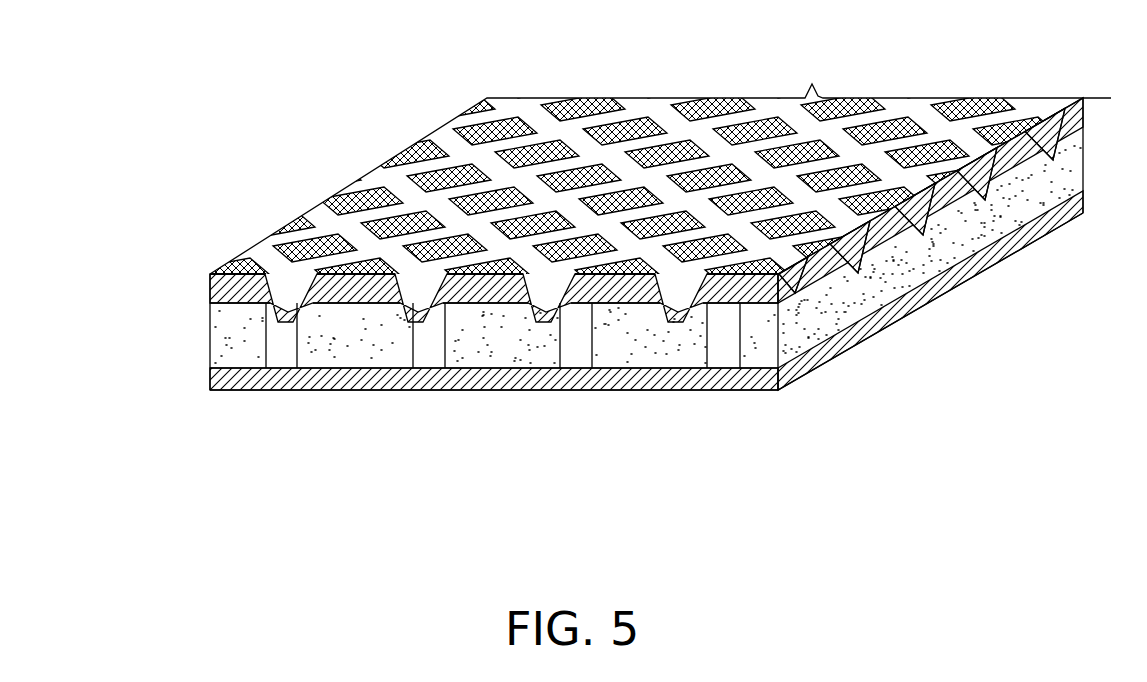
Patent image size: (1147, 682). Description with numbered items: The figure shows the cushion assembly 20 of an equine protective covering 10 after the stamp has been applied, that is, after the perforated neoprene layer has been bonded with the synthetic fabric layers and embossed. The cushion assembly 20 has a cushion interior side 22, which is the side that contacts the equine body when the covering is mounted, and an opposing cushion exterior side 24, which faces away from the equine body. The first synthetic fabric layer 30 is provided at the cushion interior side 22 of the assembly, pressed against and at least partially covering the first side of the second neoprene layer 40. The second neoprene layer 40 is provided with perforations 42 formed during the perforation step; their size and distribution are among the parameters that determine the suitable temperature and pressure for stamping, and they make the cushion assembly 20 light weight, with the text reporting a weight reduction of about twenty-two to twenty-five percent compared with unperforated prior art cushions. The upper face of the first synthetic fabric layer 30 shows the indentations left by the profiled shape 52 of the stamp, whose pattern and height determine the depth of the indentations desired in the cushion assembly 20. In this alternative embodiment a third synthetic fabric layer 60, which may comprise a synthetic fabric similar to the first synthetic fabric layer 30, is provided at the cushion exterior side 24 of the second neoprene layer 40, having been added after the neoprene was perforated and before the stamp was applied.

The equine protective covering 10 is at (584, 240).
The cushion assembly 20 is at (564, 285).
The cushion interior side 22 is at (614, 178).
The cushion exterior side 24 is at (242, 405).
The first synthetic fabric layer 30 is at (228, 289).
The second neoprene layer 40 is at (220, 360).
The perforations 42 is at (281, 346).
The profiled shape 52 is at (413, 196).
The third synthetic fabric layer 60 is at (752, 406).